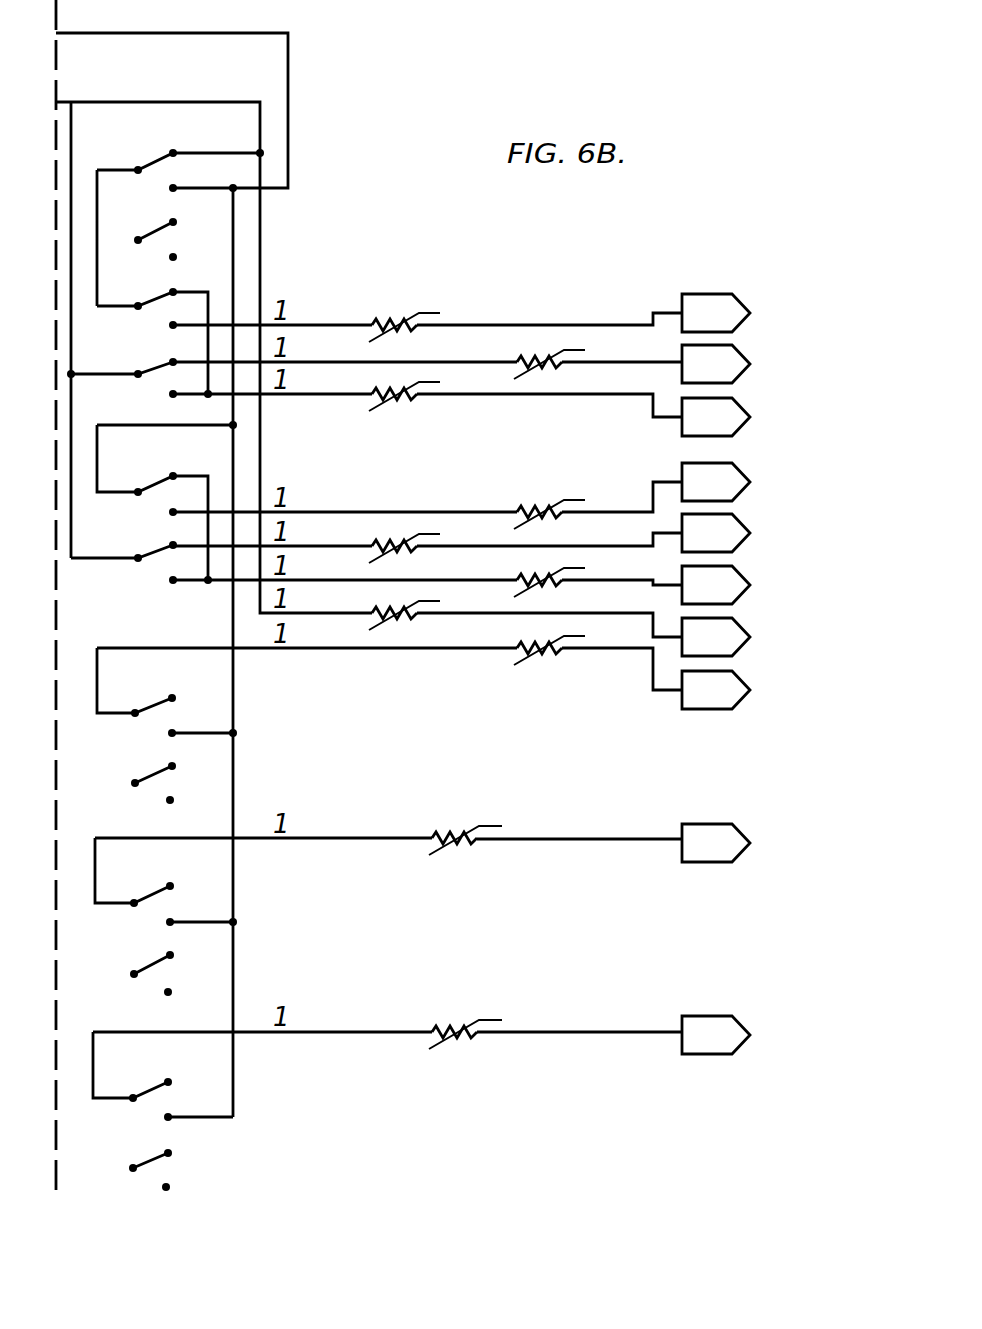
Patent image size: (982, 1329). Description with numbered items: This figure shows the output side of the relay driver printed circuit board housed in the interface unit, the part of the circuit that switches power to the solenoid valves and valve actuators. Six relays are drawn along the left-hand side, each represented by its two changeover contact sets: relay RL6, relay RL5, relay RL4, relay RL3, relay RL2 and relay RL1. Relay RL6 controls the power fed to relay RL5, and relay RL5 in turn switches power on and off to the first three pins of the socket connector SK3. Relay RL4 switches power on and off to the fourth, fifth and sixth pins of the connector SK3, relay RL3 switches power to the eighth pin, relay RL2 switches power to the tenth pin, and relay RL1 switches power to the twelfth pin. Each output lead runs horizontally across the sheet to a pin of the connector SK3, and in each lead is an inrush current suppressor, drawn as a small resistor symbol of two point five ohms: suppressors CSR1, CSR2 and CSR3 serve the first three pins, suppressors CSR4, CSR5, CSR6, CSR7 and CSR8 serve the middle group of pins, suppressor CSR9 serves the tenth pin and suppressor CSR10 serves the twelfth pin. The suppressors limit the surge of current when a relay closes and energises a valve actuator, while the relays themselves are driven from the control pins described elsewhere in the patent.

The relay RL1 is at (262, 1111).
The relay RL2 is at (263, 917).
The relay RL3 is at (307, 726).
The relay RL4 is at (294, 502).
The relay RL5 is at (294, 320).
The relay RL6 is at (177, 206).
The inrush current suppressor CSR1 is at (400, 319).
The inrush current suppressor CSR2 is at (545, 356).
The inrush current suppressor CSR3 is at (400, 388).
The inrush current suppressor CSR4 is at (545, 506).
The inrush current suppressor CSR5 is at (400, 540).
The inrush current suppressor CSR6 is at (545, 574).
The inrush current suppressor CSR7 is at (400, 607).
The inrush current suppressor CSR8 is at (545, 642).
The inrush current suppressor CSR9 is at (465, 831).
The inrush current suppressor CSR10 is at (457, 1025).
The output socket connector SK3 is at (754, 667).